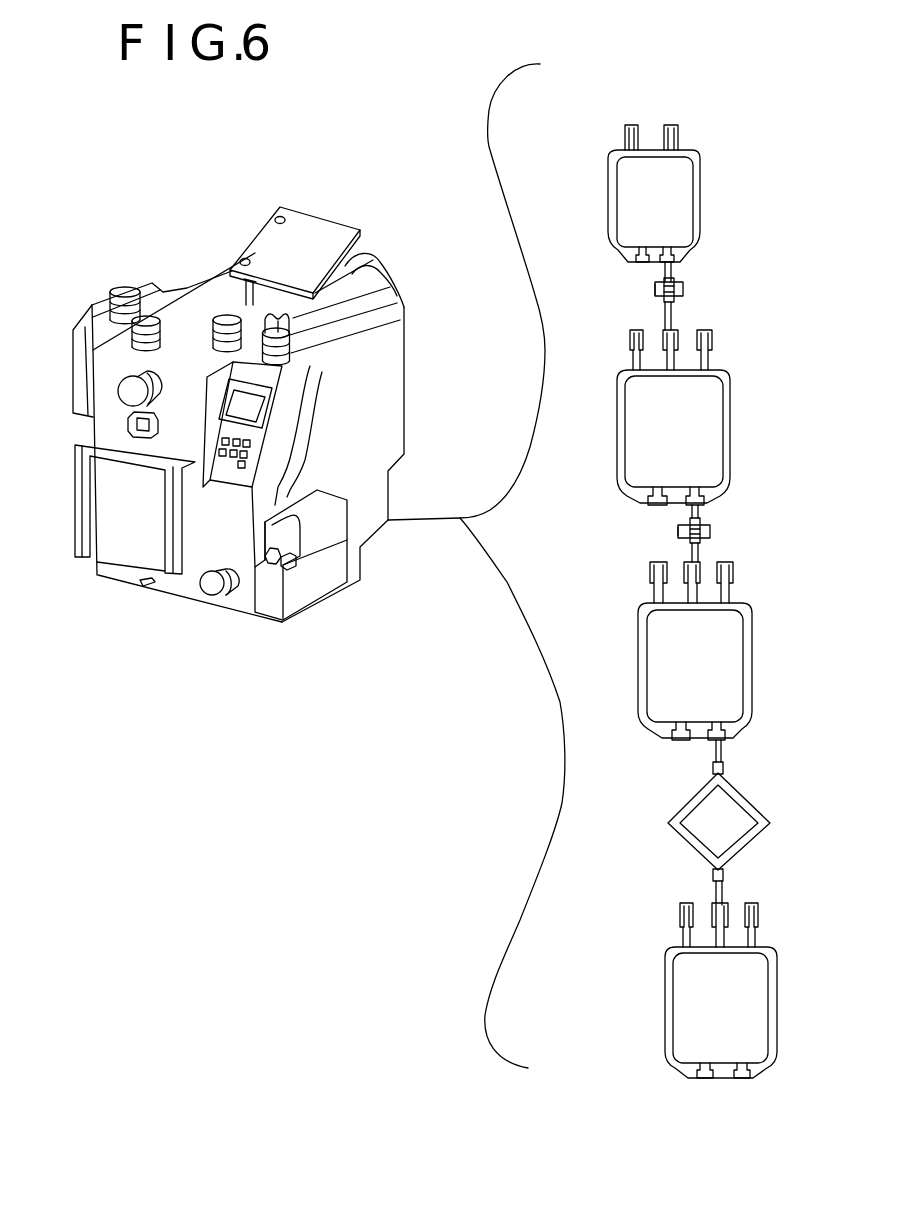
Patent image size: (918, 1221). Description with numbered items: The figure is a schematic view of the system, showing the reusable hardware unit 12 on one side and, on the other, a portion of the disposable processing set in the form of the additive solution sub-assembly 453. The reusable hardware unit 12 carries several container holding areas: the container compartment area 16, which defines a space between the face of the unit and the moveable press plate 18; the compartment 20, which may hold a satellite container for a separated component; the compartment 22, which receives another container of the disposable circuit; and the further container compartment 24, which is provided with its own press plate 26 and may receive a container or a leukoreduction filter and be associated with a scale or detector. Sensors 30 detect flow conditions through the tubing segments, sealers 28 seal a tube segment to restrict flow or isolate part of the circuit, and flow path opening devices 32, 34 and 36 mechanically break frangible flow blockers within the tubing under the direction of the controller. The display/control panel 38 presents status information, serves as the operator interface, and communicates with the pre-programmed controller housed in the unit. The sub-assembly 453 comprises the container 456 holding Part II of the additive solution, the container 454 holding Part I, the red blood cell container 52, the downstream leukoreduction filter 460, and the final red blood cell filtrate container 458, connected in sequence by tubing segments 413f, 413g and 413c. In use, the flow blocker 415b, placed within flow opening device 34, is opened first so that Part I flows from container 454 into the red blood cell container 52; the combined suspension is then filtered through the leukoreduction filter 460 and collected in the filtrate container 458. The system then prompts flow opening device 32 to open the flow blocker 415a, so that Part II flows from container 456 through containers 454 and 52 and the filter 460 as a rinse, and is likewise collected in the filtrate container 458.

The reusable hardware unit 12 is at (71, 300).
The container compartment area 16 is at (77, 505).
The press plate 18 is at (113, 537).
The compartment 20 is at (86, 312).
The compartment 22 is at (318, 590).
The container compartment 24 is at (348, 271).
The press plate 26 is at (328, 233).
The sealers 28 is at (118, 391).
The sensors 30 is at (157, 327).
The flow path opening device 32 is at (138, 436).
The flow path opening device 34 is at (290, 318).
The flow path opening device 36 is at (272, 577).
The display/control panel 38 is at (250, 427).
The red blood cell container 52 is at (732, 663).
The additive solution sub-assembly 453 is at (833, 590).
The container 454 is at (707, 405).
The container 456 is at (677, 177).
The red blood cell filtrate container 458 is at (750, 1017).
The leukoreduction filter 460 is at (733, 830).
The tubing 413c is at (713, 892).
The tubing 413f is at (672, 313).
The tubing 413g is at (695, 550).
The flow blocker 415a is at (665, 296).
The flow blocker 415b is at (688, 534).